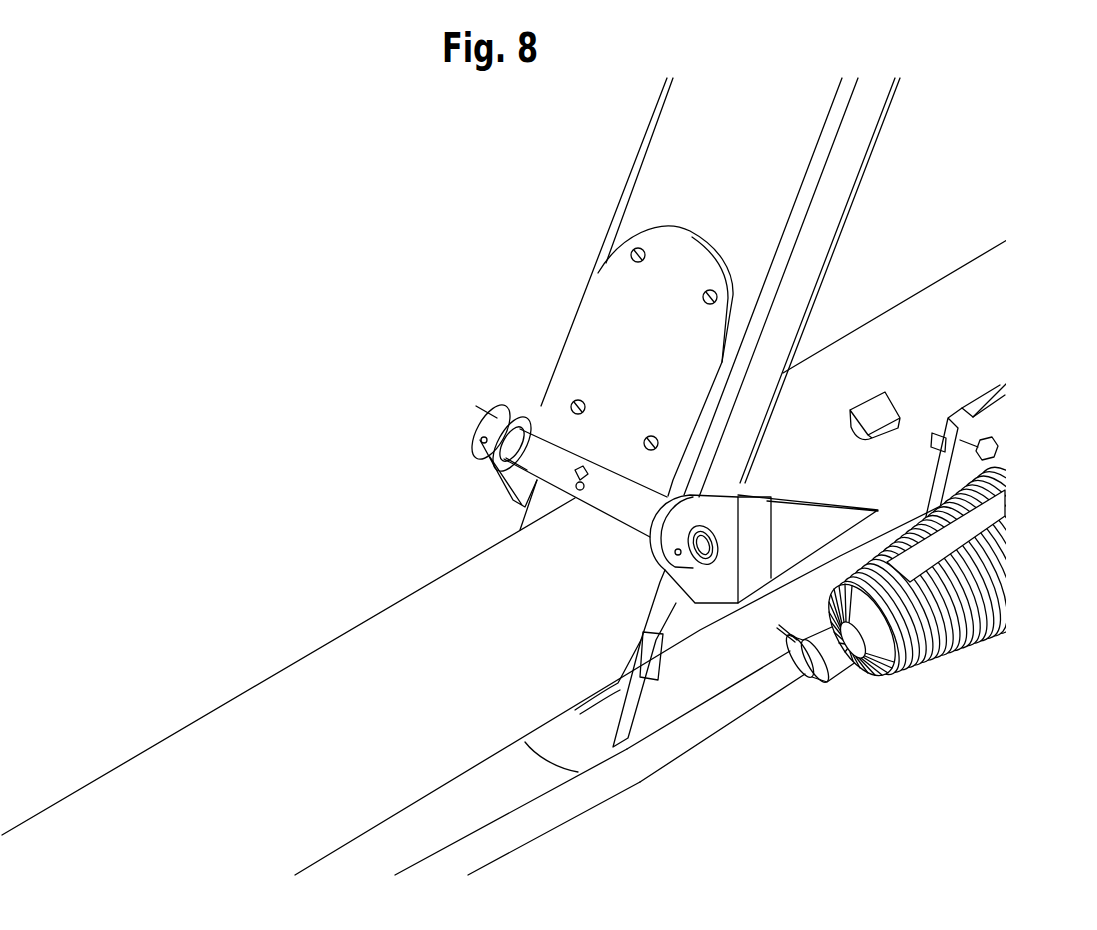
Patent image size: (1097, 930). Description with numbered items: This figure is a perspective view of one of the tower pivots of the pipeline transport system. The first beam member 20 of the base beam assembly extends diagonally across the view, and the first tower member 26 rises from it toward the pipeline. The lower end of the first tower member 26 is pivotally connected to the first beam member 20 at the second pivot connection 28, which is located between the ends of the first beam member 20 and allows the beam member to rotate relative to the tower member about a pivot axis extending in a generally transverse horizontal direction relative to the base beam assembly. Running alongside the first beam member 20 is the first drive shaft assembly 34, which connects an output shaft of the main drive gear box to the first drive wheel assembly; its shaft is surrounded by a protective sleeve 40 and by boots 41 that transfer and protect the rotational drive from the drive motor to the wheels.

The first beam member 20 is at (381, 647).
The first tower member 26 is at (653, 167).
The second pivot connection 28 is at (530, 445).
The first drive shaft assembly 34 is at (642, 761).
The protective sleeve 40 is at (767, 697).
The boots 41 is at (947, 647).